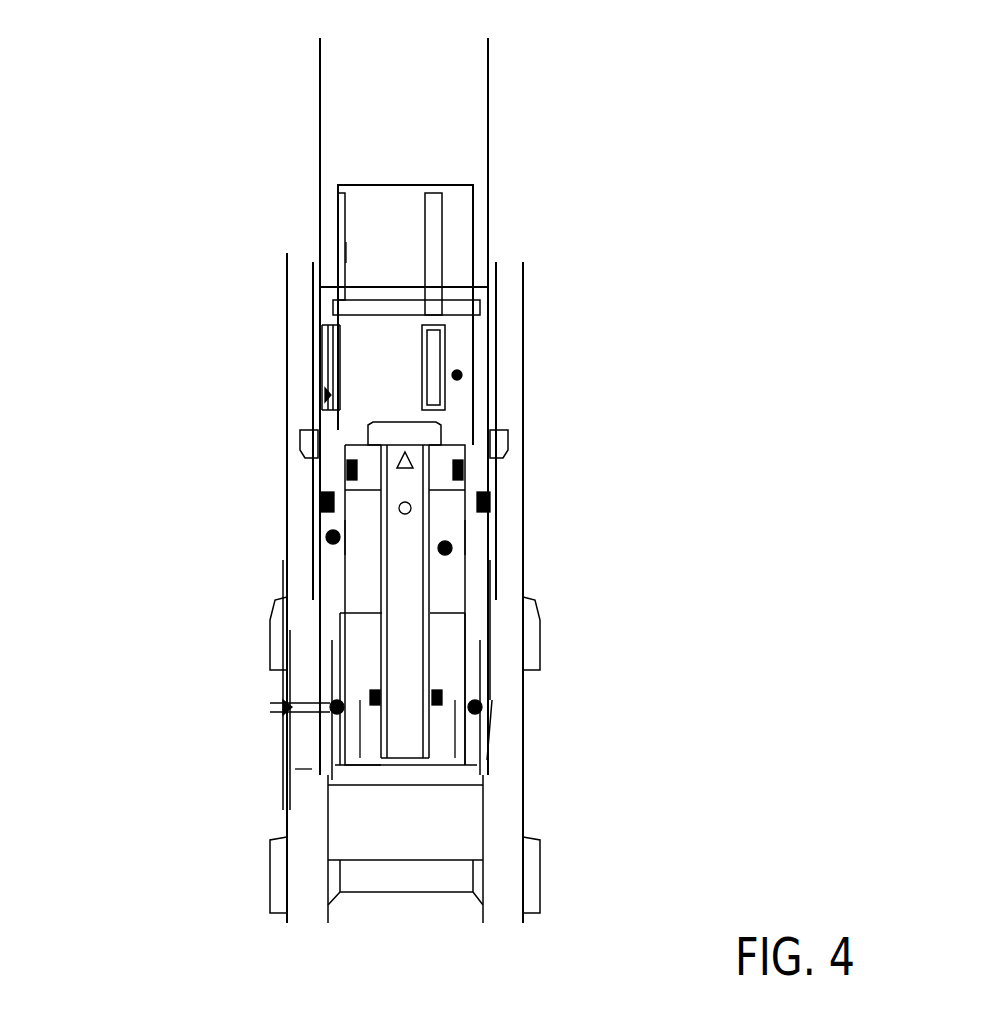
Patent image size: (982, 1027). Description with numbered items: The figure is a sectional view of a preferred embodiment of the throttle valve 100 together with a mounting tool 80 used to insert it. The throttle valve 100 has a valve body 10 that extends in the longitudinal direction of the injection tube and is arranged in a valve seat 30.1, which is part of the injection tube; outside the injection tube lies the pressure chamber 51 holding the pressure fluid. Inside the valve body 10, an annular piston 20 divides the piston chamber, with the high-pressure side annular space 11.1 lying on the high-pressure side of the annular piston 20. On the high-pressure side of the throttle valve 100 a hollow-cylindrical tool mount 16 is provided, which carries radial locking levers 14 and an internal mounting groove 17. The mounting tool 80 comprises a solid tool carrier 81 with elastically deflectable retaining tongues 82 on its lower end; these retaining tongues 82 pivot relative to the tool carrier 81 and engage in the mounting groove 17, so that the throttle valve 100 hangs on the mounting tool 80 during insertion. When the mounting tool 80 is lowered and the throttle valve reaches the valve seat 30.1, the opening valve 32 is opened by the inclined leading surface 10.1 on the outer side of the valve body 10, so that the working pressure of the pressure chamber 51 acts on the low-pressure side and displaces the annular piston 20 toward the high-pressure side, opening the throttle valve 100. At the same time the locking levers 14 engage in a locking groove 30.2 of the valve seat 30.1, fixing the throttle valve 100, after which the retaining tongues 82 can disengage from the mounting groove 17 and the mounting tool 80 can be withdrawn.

The mounting tool 80 is at (452, 44).
The tool carrier 81 is at (470, 126).
The retaining tongues 82 is at (440, 242).
The mounting groove 17 is at (480, 303).
The tool mount 16 is at (460, 375).
The locking levers 14 is at (320, 343).
The locking groove 30.2 is at (505, 440).
The high-pressure side annular space 11.1 is at (490, 497).
The annular piston 20 is at (450, 548).
The inclined leading surface 10.1 is at (520, 605).
The valve body 10 is at (320, 540).
The valve seat 30.1 is at (310, 630).
The opening valve 32 is at (283, 707).
The pressure chamber 51 is at (246, 512).
The throttle valve 100 is at (262, 268).